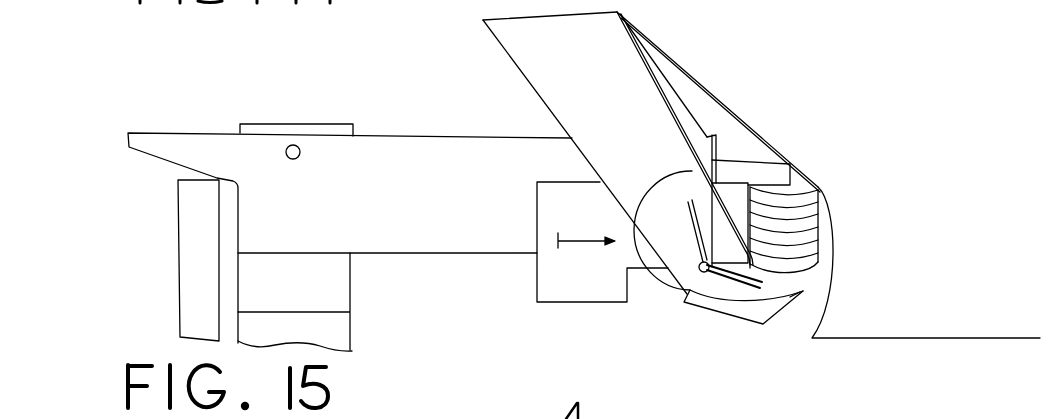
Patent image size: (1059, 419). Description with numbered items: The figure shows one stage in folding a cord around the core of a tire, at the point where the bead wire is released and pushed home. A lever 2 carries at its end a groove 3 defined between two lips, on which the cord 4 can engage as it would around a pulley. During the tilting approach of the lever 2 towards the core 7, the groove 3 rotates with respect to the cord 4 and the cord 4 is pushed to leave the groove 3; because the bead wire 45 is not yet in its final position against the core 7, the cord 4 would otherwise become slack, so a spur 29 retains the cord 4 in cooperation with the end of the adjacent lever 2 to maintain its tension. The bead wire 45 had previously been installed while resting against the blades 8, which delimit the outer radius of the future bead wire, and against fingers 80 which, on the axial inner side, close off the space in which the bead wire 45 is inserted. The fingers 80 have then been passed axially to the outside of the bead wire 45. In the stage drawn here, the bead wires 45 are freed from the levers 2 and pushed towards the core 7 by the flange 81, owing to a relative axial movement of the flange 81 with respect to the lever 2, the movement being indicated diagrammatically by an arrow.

The lever 2 is at (577, 61).
The groove 3 is at (688, 285).
The cord 4 is at (627, 23).
The core 7 is at (795, 121).
The blade 8 is at (757, 172).
The spur 29 is at (740, 284).
The bead wire 45 is at (800, 224).
The finger 80 is at (462, 162).
The flange 81 is at (552, 278).